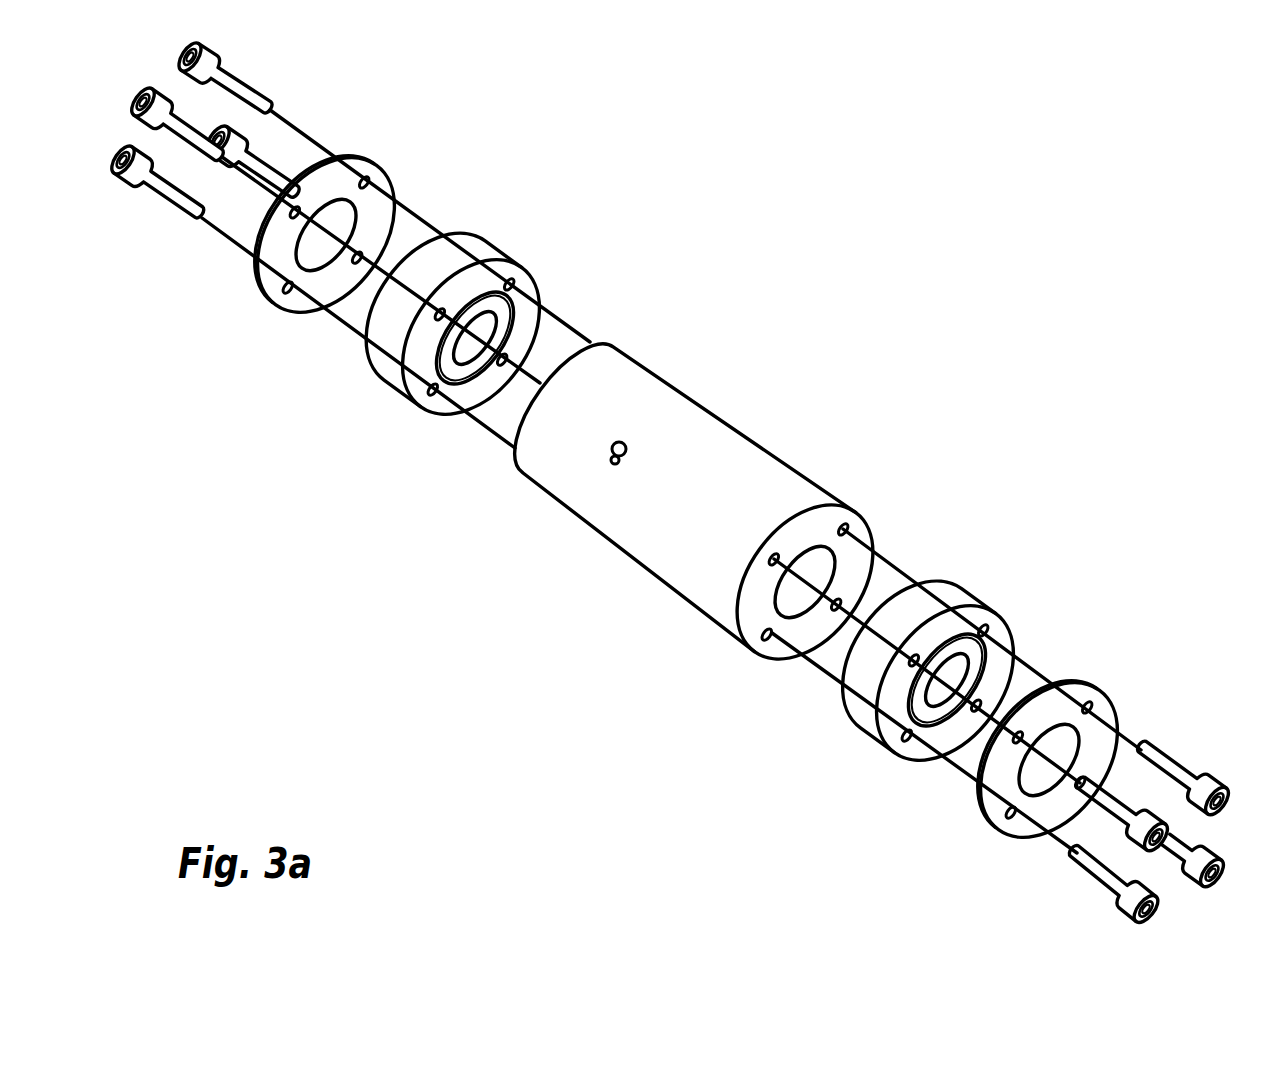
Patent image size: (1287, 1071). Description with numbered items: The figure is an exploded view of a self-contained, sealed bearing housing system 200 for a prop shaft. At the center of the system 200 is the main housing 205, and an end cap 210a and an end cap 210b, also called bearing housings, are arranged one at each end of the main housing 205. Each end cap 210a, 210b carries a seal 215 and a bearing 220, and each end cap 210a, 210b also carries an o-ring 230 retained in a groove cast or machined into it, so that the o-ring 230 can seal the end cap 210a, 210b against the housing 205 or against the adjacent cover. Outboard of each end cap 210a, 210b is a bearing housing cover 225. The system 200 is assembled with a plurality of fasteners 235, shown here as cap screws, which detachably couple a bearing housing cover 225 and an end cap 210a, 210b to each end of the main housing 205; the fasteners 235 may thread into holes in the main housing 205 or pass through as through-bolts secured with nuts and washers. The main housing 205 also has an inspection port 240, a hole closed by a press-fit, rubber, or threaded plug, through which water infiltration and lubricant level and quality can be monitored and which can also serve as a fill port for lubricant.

The sealed bearing housing system 200 is at (823, 158).
The main housing 205 is at (717, 408).
The end cap 210a is at (961, 587).
The end cap 210b is at (488, 242).
The seal 215 is at (982, 641).
The bearing 220 is at (512, 327).
The bearing housing cover 225 is at (365, 153).
The o-ring 230 is at (415, 397).
The fastener 235 is at (241, 76).
The inspection port 240 is at (617, 441).